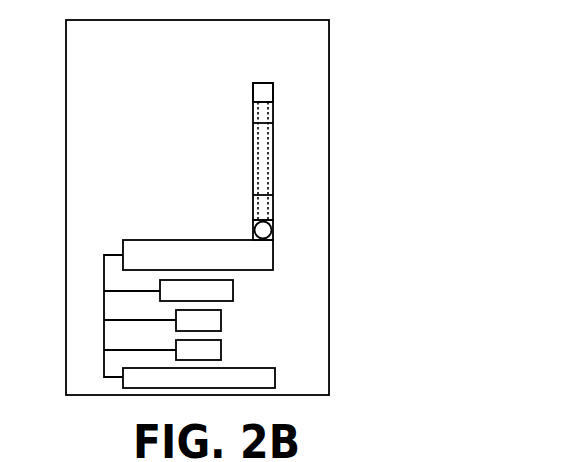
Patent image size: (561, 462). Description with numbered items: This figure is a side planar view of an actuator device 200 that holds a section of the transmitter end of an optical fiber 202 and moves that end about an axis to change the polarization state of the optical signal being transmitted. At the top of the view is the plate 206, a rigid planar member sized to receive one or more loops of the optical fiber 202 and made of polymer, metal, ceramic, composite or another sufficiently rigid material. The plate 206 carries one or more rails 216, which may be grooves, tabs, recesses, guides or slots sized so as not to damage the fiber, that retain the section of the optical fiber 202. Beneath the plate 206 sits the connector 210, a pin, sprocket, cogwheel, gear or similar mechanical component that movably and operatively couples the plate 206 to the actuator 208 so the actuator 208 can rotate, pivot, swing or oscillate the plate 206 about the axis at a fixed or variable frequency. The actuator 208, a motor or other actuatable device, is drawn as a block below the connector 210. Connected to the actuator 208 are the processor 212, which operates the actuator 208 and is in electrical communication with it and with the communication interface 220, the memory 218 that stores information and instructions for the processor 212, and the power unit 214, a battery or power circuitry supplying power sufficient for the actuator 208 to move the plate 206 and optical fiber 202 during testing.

The actuator device 200 is at (362, 50).
The optical fiber 202 is at (257, 155).
The plate 206 is at (273, 108).
The rails 216 is at (260, 100).
The connector 210 is at (272, 233).
The actuator 208 is at (273, 258).
The processor 212 is at (233, 291).
The memory 218 is at (221, 320).
The communication interface 220 is at (221, 350).
The power unit 214 is at (275, 378).